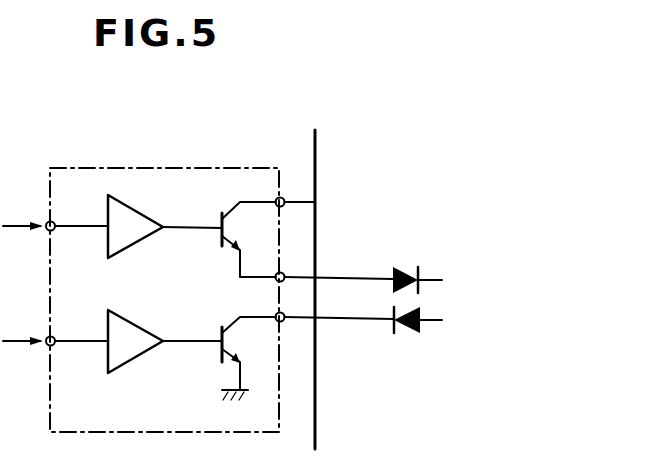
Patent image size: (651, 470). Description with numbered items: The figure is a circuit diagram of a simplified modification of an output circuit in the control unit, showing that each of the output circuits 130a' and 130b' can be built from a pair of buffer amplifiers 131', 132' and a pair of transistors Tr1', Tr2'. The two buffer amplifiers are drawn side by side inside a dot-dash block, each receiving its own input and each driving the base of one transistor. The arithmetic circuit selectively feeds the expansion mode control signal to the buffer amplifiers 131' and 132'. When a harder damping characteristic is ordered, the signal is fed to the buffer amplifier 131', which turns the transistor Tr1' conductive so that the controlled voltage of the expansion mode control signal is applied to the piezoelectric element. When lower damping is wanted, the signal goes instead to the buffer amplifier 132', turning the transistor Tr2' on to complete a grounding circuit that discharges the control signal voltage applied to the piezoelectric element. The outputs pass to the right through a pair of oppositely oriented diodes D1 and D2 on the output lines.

The output circuit 130a' is at (164, 261).
The output circuit 130b' is at (164, 261).
The buffer amplifier 131' is at (146, 214).
The buffer amplifier 132' is at (141, 320).
The transistor Tr1' is at (249, 203).
The transistor Tr2' is at (217, 371).
The diode D1 is at (405, 265).
The diode D2 is at (405, 334).